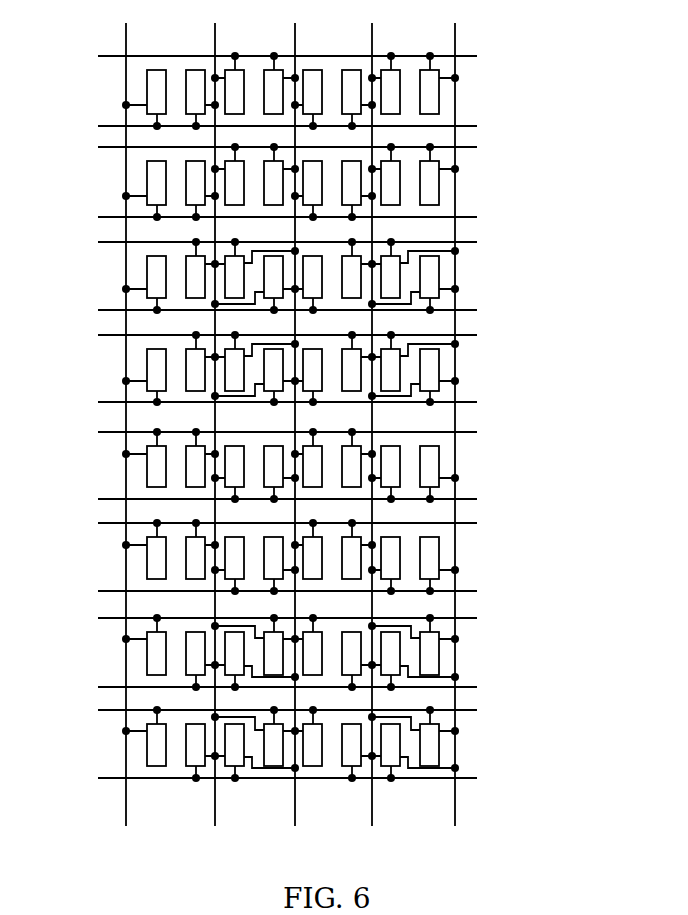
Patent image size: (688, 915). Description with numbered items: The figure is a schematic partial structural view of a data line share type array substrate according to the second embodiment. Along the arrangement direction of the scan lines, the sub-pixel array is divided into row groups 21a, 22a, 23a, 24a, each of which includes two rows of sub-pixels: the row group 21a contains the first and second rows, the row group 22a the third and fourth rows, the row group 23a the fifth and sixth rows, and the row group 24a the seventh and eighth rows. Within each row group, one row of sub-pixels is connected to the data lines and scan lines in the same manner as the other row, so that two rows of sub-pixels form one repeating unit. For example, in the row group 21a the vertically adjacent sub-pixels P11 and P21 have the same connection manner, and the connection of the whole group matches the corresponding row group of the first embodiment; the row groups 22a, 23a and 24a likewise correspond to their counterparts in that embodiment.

The sub-pixel P11 is at (150, 82).
The sub-pixel P21 is at (150, 184).
The row group 21a is at (482, 183).
The row group 22a is at (482, 371).
The row group 23a is at (482, 467).
The row group 24a is at (482, 654).